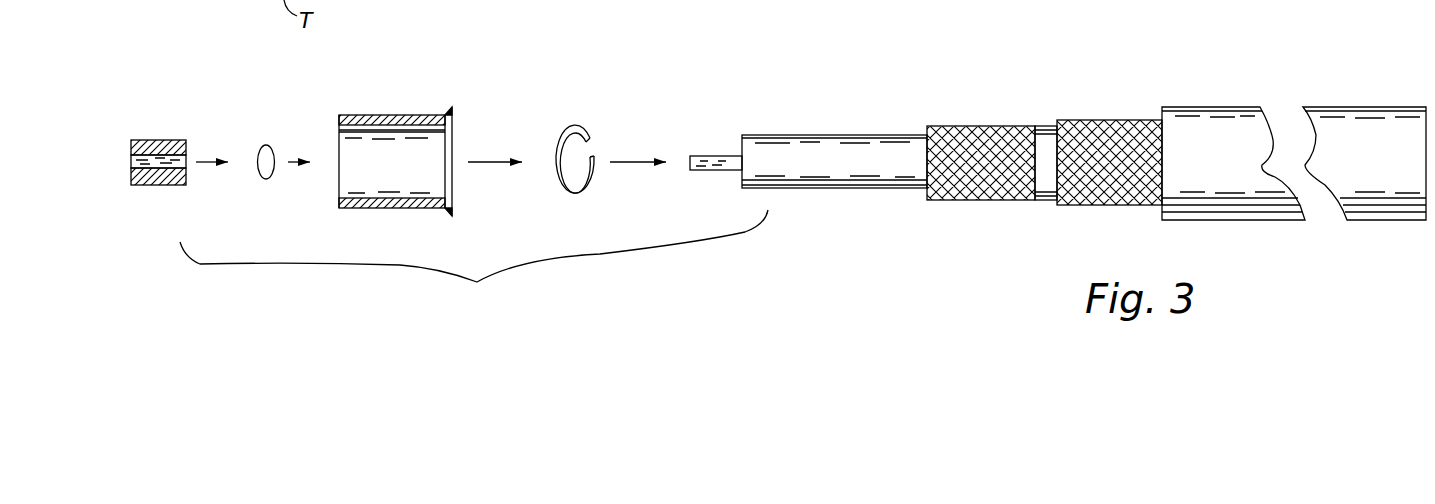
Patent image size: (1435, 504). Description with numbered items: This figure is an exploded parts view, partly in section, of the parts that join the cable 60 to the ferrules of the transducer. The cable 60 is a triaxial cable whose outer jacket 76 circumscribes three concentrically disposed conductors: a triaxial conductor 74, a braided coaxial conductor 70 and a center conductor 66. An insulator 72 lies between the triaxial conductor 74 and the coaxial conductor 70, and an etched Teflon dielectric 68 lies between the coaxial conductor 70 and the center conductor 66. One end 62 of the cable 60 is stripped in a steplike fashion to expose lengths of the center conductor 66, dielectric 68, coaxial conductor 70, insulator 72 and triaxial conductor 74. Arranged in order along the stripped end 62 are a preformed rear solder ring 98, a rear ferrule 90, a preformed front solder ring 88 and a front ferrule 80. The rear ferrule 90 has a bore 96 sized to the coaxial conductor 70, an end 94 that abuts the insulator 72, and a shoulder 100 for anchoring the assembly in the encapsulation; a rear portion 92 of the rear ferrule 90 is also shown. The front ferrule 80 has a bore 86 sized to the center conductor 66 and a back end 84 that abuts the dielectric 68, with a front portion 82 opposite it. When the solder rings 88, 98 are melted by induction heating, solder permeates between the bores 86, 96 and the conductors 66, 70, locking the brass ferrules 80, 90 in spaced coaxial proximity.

The cable 60 is at (1294, 119).
The stripped end of the cable 62 is at (1058, 119).
The center conductor 66 is at (705, 160).
The dielectric 68 is at (832, 145).
The coaxial conductor 70 is at (970, 128).
The insulator 72 is at (1045, 128).
The triaxial conductor 74 is at (1120, 135).
The outer jacket 76 is at (1386, 168).
The front ferrule 80 is at (176, 149).
The body upper portion 82 is at (130, 152).
The back end of the front ferrule 84 is at (186, 183).
The bore of the front ferrule 86 is at (130, 175).
The preformed front solder ring 88 is at (266, 145).
The rear ferrule 90 is at (416, 144).
The sleeve rear end 92 is at (338, 194).
The end of the rear ferrule 94 is at (455, 140).
The bore of the rear ferrule 96 is at (380, 180).
The preformed rear solder ring 98 is at (572, 128).
The shoulder 100 is at (452, 110).